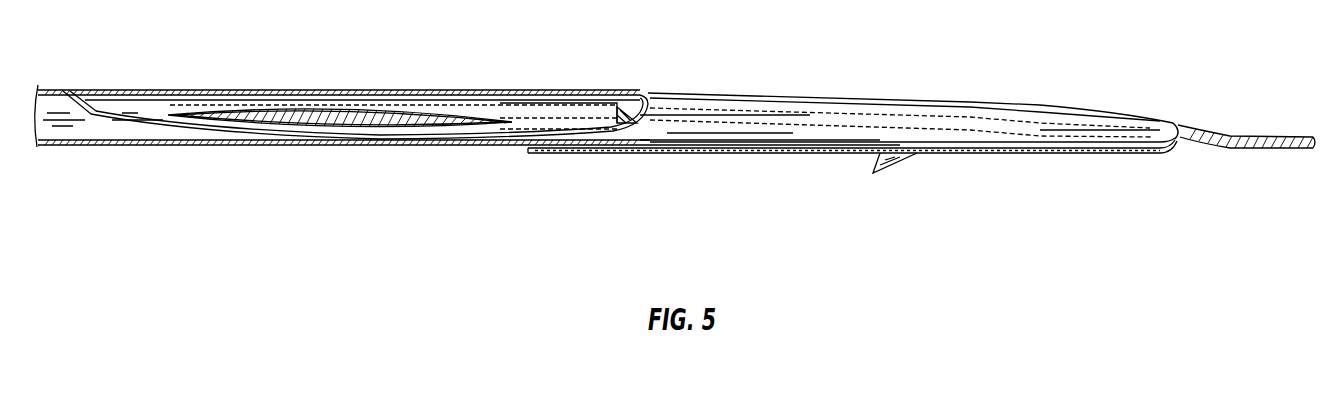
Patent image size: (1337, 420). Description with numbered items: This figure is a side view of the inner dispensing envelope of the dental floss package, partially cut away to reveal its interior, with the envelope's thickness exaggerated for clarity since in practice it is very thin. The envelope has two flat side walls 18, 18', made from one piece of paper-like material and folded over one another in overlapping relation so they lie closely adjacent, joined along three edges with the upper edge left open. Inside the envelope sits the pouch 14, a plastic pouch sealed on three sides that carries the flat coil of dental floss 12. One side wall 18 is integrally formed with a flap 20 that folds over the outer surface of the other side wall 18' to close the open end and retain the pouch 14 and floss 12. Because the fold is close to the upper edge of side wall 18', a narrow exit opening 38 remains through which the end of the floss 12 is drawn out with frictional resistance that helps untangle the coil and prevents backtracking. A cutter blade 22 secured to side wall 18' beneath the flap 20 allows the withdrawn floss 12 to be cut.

The dental floss 12 is at (437, 112).
The pouch 14 is at (127, 107).
The side wall 18 is at (547, 163).
The side wall 18' is at (907, 89).
The flap 20 is at (585, 153).
The cutter blade 22 is at (890, 170).
The exit opening 38 is at (1167, 135).